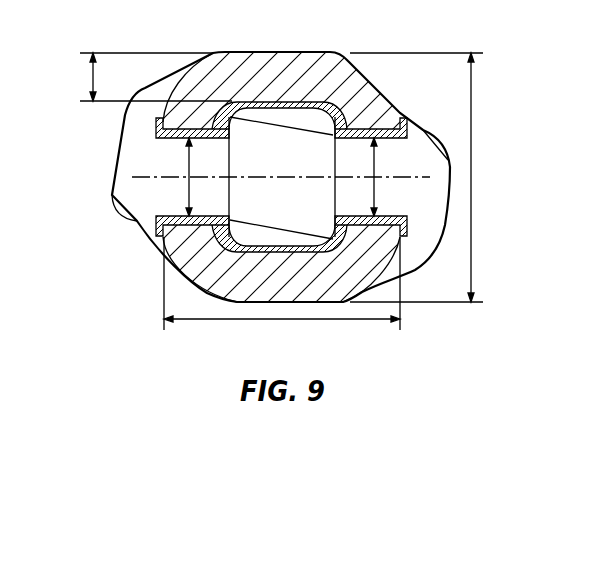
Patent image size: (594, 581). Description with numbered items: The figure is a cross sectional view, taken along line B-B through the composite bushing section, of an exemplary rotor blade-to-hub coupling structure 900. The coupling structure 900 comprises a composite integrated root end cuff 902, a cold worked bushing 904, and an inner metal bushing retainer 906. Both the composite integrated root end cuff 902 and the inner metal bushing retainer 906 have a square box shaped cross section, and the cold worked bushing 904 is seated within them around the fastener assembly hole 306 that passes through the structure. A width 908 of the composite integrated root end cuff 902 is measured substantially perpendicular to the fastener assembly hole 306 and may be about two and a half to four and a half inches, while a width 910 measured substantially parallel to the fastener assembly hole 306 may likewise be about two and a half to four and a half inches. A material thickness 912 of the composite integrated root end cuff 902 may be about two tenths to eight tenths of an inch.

The rotor blade-to-hub coupling structure 900 is at (250, 29).
The composite integrated root end cuff 902 is at (328, 303).
The cold worked bushing 904 is at (156, 160).
The inner metal bushing retainer 906 is at (167, 266).
The width 908 is at (471, 87).
The width 910 is at (200, 321).
The material thickness 912 is at (92, 80).
The fastener assembly hole 306 is at (183, 190).